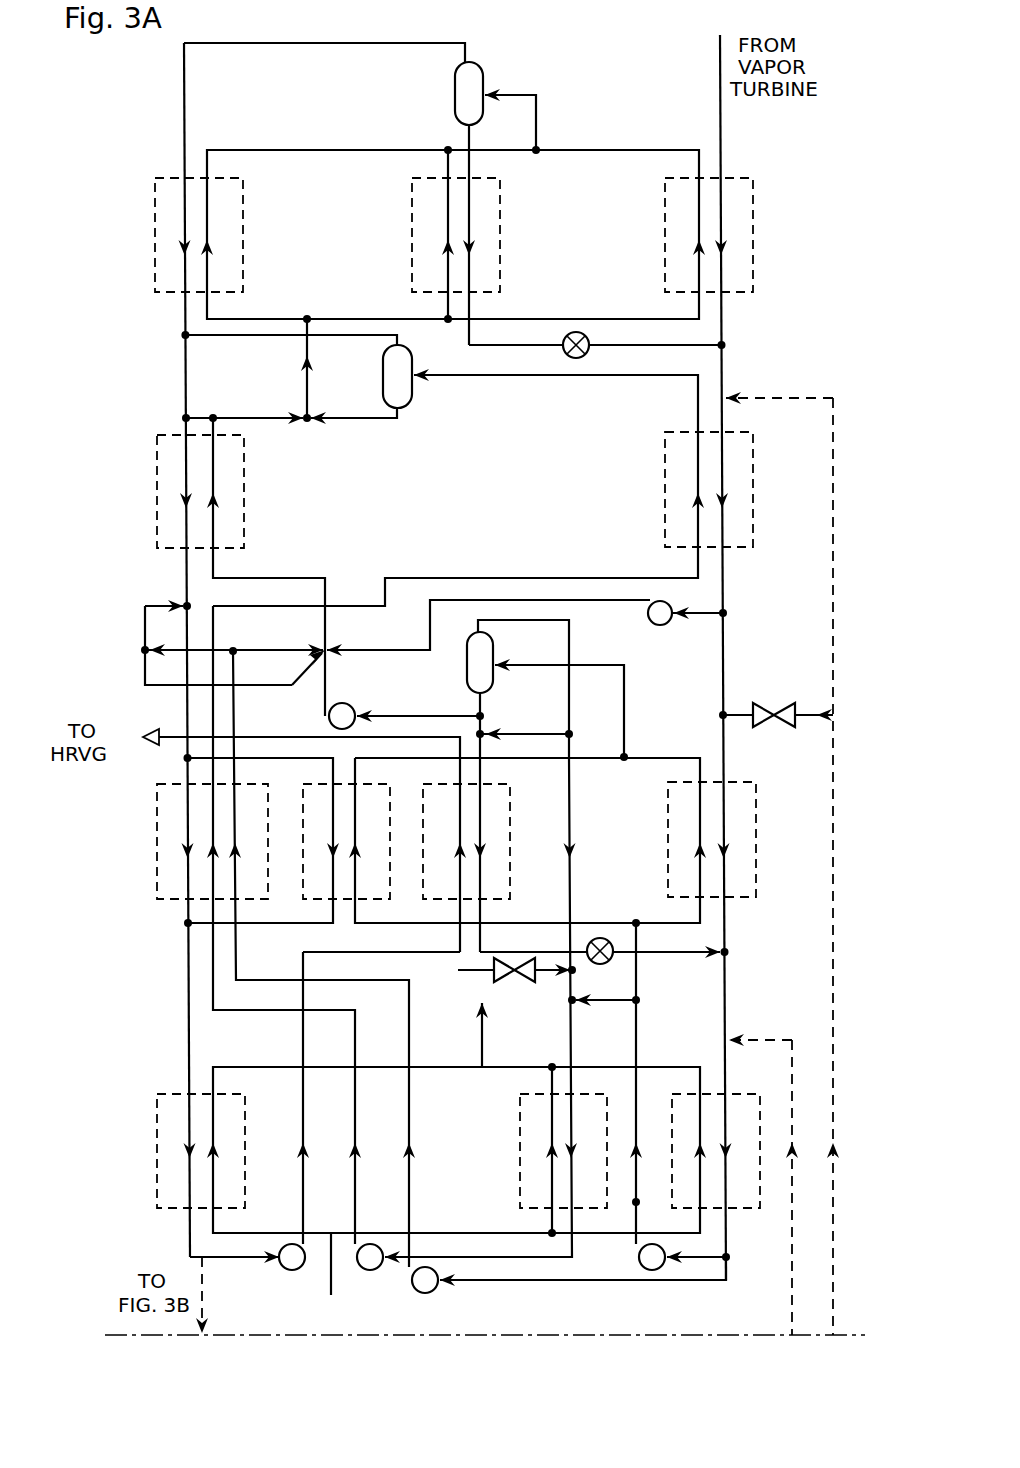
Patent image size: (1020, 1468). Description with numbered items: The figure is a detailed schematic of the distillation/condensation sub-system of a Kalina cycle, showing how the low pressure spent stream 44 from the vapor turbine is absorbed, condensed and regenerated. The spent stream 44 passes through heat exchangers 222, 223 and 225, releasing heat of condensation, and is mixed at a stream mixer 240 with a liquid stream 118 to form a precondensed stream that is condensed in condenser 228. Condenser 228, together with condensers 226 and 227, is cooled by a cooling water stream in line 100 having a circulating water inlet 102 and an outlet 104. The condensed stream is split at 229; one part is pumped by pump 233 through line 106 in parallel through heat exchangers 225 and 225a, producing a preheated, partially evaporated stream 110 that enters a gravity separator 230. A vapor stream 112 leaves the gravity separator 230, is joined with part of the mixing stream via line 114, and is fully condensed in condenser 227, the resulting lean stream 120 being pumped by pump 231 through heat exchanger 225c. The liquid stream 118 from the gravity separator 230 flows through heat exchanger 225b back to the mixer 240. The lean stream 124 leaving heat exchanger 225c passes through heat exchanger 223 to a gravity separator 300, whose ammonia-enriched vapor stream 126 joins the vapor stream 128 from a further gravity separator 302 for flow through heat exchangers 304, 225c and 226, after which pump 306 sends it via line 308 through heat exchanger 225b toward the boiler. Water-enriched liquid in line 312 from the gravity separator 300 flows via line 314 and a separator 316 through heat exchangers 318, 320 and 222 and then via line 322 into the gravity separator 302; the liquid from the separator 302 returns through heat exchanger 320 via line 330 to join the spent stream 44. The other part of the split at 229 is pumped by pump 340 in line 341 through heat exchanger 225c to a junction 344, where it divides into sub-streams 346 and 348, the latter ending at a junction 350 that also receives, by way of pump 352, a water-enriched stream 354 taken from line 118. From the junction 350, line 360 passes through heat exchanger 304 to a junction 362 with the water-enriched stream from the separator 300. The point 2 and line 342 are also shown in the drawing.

The junction 2 is at (640, 1205).
The low pressure spent stream 44 is at (722, 110).
The line 100 is at (668, 1065).
The circulating water inlet 102 is at (332, 1268).
The outlet 104 is at (485, 1050).
The line 106 is at (525, 922).
The preheated stream line 110 is at (625, 725).
The vapor stream 112 is at (568, 647).
The line 114 is at (612, 1002).
The liquid stream line 118 is at (480, 770).
The lean stream 120 is at (573, 1220).
The lean stream 124 is at (420, 578).
The ammonia-enriched vapor stream 126 is at (330, 337).
The vapor stream 128 is at (285, 43).
The heat exchanger 222 is at (665, 236).
The heat exchanger 223 is at (665, 495).
The heat exchanger 225 is at (668, 838).
The heat exchanger 225a is at (302, 868).
The heat exchanger 225b is at (510, 808).
The heat exchanger 225c is at (157, 835).
The condenser 226 is at (245, 1132).
The condenser 227 is at (520, 1150).
The condenser 228 is at (760, 1108).
The split 229 is at (730, 1255).
The gravity separator 230 is at (467, 662).
The pump 231 is at (382, 1243).
The pump 233 is at (652, 1268).
The stream mixer 240 is at (727, 955).
The gravity separator 300 is at (415, 388).
The gravity separator 302 is at (455, 90).
The heat exchanger 304 is at (157, 495).
The pump 306 is at (286, 1270).
The line 308 is at (302, 1027).
The line 312 is at (348, 420).
The line 314 is at (305, 390).
The separator 316 is at (308, 318).
The heat exchanger 318 is at (155, 236).
The heat exchanger 320 is at (412, 236).
The line 322 is at (525, 92).
The line 330 is at (538, 352).
The pump 340 is at (432, 1292).
The line 341 is at (410, 1005).
The line 342 is at (508, 1282).
The junction 344 is at (233, 640).
The sub-stream 346 is at (175, 646).
The sub-stream 348 is at (290, 658).
The junction 350 is at (327, 645).
The pump 352 is at (327, 720).
The water-enriched stream 354 is at (387, 713).
The line 360 is at (228, 582).
The junction 362 is at (308, 420).